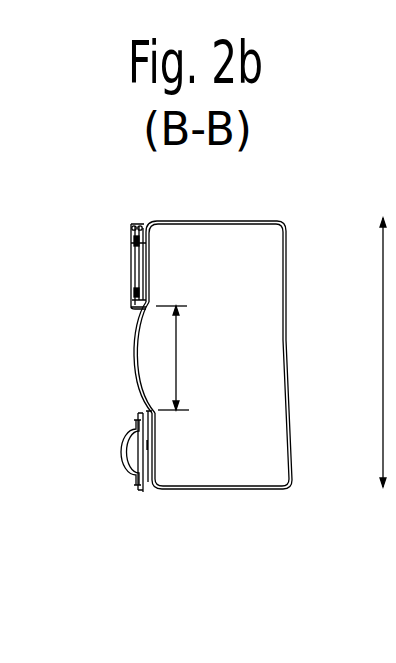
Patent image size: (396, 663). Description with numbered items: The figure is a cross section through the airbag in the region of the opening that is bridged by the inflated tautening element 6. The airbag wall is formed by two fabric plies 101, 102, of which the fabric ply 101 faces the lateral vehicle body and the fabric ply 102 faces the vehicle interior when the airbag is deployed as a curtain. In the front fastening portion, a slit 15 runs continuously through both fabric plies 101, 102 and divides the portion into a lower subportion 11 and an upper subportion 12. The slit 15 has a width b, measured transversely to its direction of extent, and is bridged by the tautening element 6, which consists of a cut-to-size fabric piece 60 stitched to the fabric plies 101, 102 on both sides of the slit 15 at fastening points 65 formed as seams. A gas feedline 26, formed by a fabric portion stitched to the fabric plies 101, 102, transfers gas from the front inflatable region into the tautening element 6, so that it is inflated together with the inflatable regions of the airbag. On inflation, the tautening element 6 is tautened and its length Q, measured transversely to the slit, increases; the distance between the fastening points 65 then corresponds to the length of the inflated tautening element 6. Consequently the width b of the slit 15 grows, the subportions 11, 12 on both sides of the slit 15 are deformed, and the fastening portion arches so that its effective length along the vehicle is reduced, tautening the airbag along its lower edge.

The tautening element 6 is at (264, 203).
The cut-to-size fabric piece 60 is at (288, 272).
The fastening points 65 is at (136, 241).
The upper subportion 12 is at (116, 300).
The slit 15 is at (140, 410).
The gas feedline 26 is at (133, 452).
The lower subportion 11 is at (121, 474).
The fabric ply 101 is at (145, 494).
The fabric ply 102 is at (152, 496).
The width of the slit b is at (176, 358).
The length of the tautening element Q is at (373, 352).